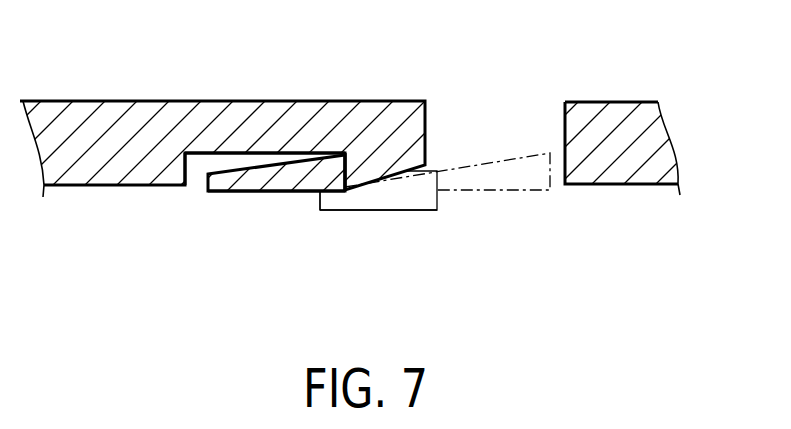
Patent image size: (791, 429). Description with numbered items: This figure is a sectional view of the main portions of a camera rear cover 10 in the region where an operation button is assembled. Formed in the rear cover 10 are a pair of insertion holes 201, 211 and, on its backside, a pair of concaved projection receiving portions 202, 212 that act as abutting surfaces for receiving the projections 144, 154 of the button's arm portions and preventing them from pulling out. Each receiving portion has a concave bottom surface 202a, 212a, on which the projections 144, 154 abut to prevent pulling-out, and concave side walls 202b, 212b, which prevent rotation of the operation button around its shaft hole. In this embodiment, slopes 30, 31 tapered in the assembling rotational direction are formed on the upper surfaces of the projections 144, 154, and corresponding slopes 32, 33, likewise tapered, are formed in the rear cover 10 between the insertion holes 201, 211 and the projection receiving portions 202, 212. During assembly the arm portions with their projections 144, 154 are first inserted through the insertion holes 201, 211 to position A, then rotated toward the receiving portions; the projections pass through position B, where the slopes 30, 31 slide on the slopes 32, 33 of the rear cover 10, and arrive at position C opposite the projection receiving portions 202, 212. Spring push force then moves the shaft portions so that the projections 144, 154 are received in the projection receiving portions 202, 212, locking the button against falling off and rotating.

The rear cover 10 is at (633, 106).
The slope 30 is at (293, 104).
The slope 31 is at (270, 165).
The slope 32 is at (382, 215).
The slope 33 is at (407, 172).
The projection 144 is at (276, 239).
The projection 154 is at (262, 191).
The insertion hole 201 is at (633, 117).
The insertion hole 211 is at (565, 132).
The projection receiving portion 202 is at (260, 214).
The projection receiving portion 212 is at (203, 186).
The concave bottom surface 202a is at (197, 106).
The concave bottom surface 212a is at (195, 160).
The concave side wall 202b is at (248, 152).
The concave side wall 212b is at (339, 163).
The position A is at (527, 188).
The position B is at (348, 205).
The position C is at (302, 192).